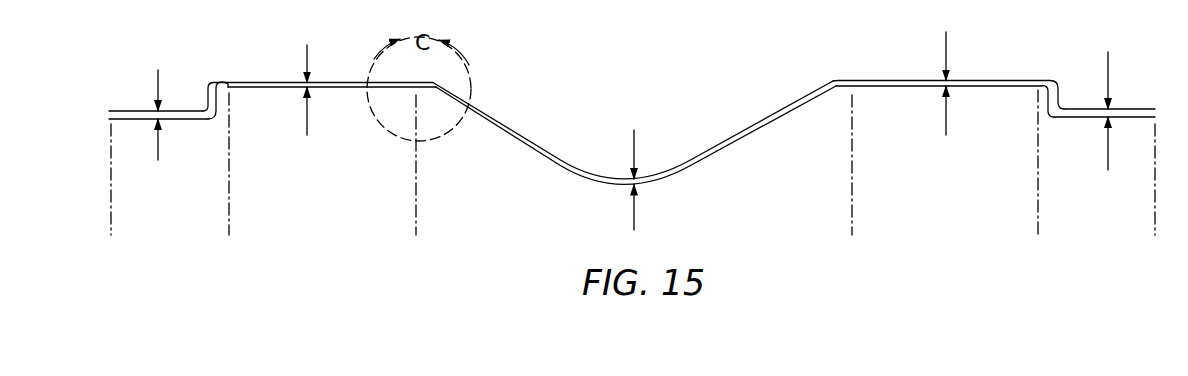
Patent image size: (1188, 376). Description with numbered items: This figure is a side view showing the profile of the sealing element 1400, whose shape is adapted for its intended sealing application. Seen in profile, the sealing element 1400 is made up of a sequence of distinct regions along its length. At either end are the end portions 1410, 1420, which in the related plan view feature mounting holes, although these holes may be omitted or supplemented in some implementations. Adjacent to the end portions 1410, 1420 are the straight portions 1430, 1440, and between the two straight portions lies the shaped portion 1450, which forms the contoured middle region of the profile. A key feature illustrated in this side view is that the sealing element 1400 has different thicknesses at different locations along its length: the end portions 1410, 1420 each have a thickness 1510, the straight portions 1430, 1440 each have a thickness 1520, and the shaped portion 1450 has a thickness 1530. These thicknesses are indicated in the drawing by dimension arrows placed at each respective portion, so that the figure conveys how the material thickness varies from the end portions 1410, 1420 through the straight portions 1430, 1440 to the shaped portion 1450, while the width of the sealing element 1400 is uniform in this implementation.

The sealing element 1400 is at (724, 84).
The end portion 1410 is at (183, 122).
The end portion 1420 is at (1075, 118).
The straight portion 1430 is at (270, 88).
The straight portion 1440 is at (898, 87).
The shaped portion 1450 is at (528, 143).
The thickness 1510 is at (159, 84).
The thickness 1520 is at (308, 60).
The thickness 1530 is at (634, 136).